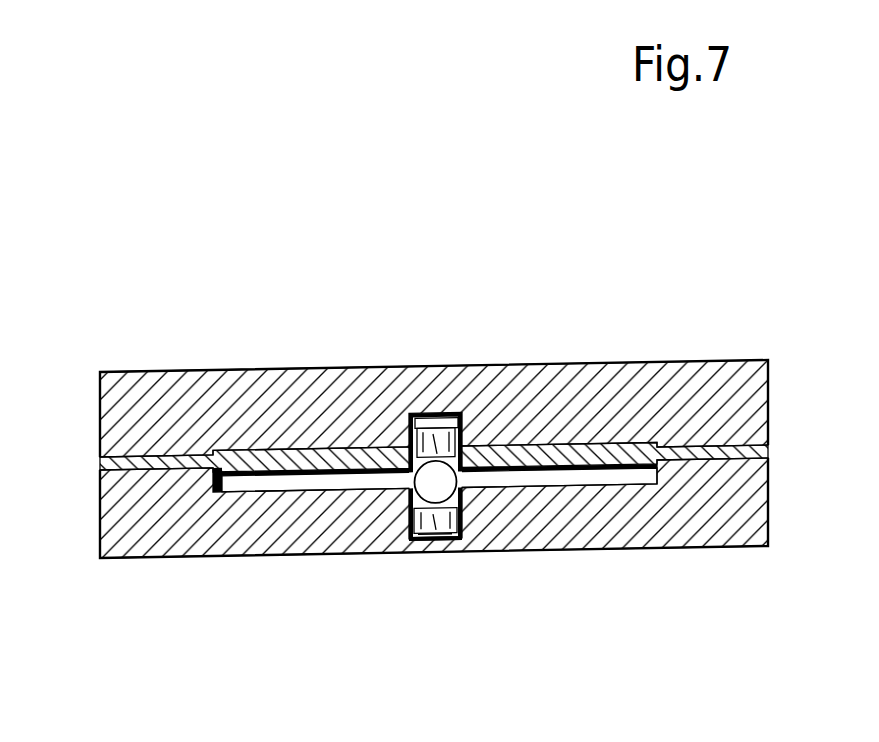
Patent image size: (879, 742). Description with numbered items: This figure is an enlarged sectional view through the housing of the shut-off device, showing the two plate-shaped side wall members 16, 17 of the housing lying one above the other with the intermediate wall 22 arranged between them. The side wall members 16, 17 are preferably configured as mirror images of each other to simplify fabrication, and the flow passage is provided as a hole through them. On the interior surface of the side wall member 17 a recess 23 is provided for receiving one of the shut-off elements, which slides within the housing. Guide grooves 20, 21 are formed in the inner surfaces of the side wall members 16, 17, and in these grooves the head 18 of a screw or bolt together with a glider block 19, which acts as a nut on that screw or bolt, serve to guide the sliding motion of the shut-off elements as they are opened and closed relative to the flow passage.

The side wall member 16 is at (205, 400).
The side wall member 17 is at (178, 533).
The head of screw or bolt 18 is at (425, 413).
The glider block 19 is at (433, 522).
The guide groove 20 is at (453, 413).
The guide groove 21 is at (458, 540).
The intermediate wall 22 is at (585, 440).
The recess 23 is at (623, 476).